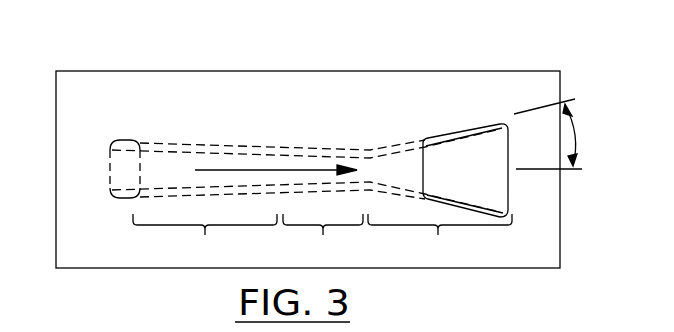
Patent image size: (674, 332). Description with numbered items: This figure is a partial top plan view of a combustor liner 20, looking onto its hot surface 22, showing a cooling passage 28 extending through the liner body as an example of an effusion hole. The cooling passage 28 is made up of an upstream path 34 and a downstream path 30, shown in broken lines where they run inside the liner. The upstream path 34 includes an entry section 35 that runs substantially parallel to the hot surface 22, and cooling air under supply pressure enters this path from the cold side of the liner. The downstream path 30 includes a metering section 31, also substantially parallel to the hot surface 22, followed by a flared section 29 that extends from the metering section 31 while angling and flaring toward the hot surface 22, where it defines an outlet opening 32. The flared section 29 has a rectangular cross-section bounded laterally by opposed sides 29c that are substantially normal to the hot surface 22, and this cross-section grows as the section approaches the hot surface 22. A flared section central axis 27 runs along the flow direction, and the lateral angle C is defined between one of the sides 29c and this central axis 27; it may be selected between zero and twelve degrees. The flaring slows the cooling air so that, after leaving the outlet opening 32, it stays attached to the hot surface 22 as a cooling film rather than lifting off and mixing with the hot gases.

The combustor liner 20 is at (542, 257).
The hot surface 22 is at (440, 83).
The upstream path 34 is at (160, 152).
The cooling passage 28 is at (325, 153).
The downstream path 30 is at (390, 148).
The entry section 35 is at (205, 242).
The metering section 31 is at (323, 242).
The flared section 29 is at (490, 149).
The opposed sides 29c is at (460, 127).
The outlet opening 32 is at (518, 135).
The flared section central axis 27 is at (578, 170).